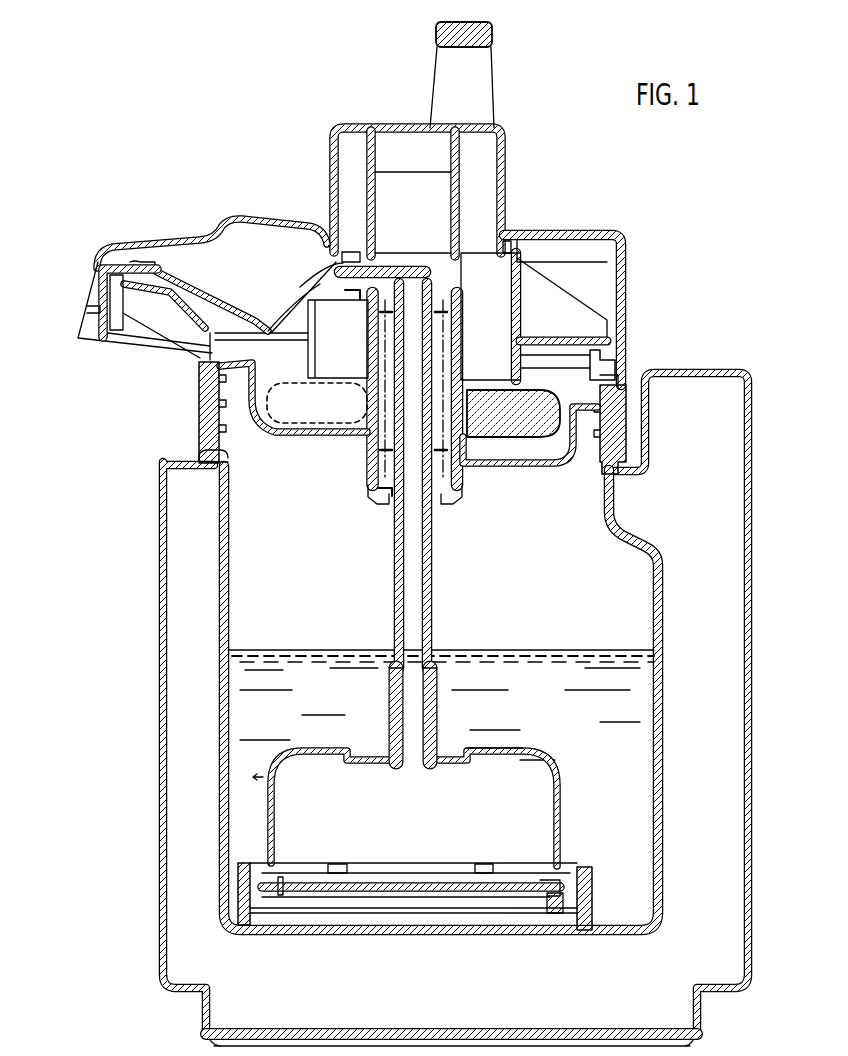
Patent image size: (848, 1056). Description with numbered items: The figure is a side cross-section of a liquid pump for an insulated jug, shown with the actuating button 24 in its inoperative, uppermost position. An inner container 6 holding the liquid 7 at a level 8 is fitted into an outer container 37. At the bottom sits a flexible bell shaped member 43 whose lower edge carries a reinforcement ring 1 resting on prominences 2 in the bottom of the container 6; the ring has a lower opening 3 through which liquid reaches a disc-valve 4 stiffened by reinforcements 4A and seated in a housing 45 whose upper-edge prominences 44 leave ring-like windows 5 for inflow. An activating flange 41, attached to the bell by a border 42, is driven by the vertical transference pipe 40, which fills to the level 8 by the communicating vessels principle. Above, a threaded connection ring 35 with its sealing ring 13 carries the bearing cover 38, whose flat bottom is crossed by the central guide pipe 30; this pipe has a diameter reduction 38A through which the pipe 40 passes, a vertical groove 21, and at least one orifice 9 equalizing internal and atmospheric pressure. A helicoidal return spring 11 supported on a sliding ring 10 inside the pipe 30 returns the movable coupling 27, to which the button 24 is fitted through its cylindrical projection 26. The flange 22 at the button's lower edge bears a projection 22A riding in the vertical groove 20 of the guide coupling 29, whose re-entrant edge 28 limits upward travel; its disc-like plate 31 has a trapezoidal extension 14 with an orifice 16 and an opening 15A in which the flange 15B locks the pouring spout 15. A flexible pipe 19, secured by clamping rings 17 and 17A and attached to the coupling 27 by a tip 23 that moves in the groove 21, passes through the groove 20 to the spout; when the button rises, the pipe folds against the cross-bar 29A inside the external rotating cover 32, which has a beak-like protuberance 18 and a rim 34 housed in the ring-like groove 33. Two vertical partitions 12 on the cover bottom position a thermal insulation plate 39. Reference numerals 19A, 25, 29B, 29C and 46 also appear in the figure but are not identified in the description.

The reinforcement ring 1 is at (584, 900).
The prominences 2 is at (522, 915).
The lower opening 3 is at (482, 910).
The disc-valve 4 is at (437, 893).
The reinforcements 4A is at (281, 876).
The ring-like fissures or windows 5 is at (387, 890).
The inner container 6 is at (222, 804).
The liquid 7 is at (322, 698).
The level 8 is at (408, 642).
The small holes 9 is at (380, 504).
The sliding washer 10 is at (376, 489).
The return spring 11 is at (382, 451).
The vertical partitions 12 is at (315, 413).
The sealing ring 13 is at (218, 375).
The extension 14 is at (165, 330).
The pouring spout 15 is at (99, 277).
The opening 15A is at (88, 340).
The ridge or flange 15B is at (92, 309).
The orifice 16 is at (103, 348).
The clamping ring 17 is at (136, 257).
The clamp 17A is at (354, 293).
The beak-like side protuberance 18 is at (150, 242).
The flexible pipe 19 is at (186, 262).
The pipe pivot 19A is at (256, 302).
The vertical groove 20 is at (312, 343).
The groove 21 is at (372, 348).
The flange 22 is at (502, 258).
The projection 22A is at (300, 285).
The tip 23 is at (348, 250).
The actuating button 24 is at (348, 124).
The pressure plate 25 is at (362, 268).
The cylindrical projection 26 is at (392, 126).
The movable coupling 27 is at (462, 158).
The re-entrant edge 28 is at (502, 246).
The guide coupling 29 is at (522, 258).
The cross-bar 29A is at (270, 300).
The link arm 29B is at (292, 272).
The housing rib 29C is at (562, 282).
The guide pipe 30 is at (463, 362).
The circular disc-like plate 31 is at (560, 338).
The external rotating cover 32 is at (626, 298).
The ring-like groove 33 is at (614, 352).
The rim 34 is at (622, 365).
The threaded connection ring 35 is at (626, 384).
The outer container 37 is at (752, 420).
The bearing cover 38 is at (575, 415).
The diameter reduction 38A is at (440, 535).
The thermal insulation plate 39 is at (522, 420).
The transference pipe 40 is at (433, 623).
The activating flange 41 is at (438, 701).
The border 42 is at (495, 751).
The flexible bell shaped member 43 is at (560, 792).
The prominences 44 is at (482, 863).
The housing 45 is at (560, 882).
The gasket 46 is at (556, 906).